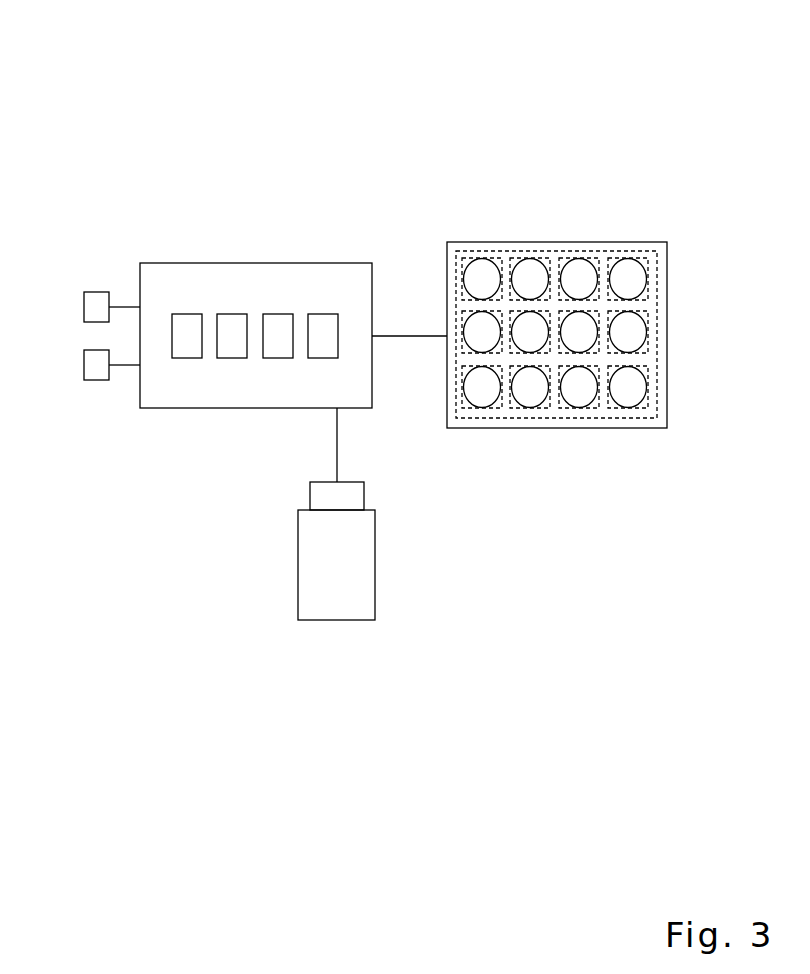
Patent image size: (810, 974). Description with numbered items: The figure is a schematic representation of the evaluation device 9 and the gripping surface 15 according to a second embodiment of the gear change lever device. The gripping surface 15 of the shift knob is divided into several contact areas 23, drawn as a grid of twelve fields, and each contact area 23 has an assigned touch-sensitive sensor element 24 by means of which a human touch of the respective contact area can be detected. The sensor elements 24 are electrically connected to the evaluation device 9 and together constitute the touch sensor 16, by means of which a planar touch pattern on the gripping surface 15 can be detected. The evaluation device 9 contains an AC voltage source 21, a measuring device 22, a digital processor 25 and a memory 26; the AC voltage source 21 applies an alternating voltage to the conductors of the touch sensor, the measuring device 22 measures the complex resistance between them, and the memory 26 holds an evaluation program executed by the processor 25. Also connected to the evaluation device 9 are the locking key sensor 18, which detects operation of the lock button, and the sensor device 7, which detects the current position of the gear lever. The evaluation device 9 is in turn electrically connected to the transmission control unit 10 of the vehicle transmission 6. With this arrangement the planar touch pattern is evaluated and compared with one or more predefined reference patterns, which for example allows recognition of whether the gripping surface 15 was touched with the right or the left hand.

The vehicle transmission 6 is at (318, 600).
The sensor device 7 is at (95, 373).
The evaluation device 9 is at (253, 260).
The transmission control unit 10 is at (357, 496).
The gripping surface 15 is at (666, 272).
The touch sensor 16 is at (643, 250).
The locking key sensor 18 is at (94, 303).
The AC voltage source 21 is at (188, 345).
The measuring device 22 is at (232, 322).
The contact area 23 is at (475, 270).
The touch-sensitive sensor element 24 is at (492, 260).
The digital processor 25 is at (278, 345).
The memory 26 is at (322, 325).